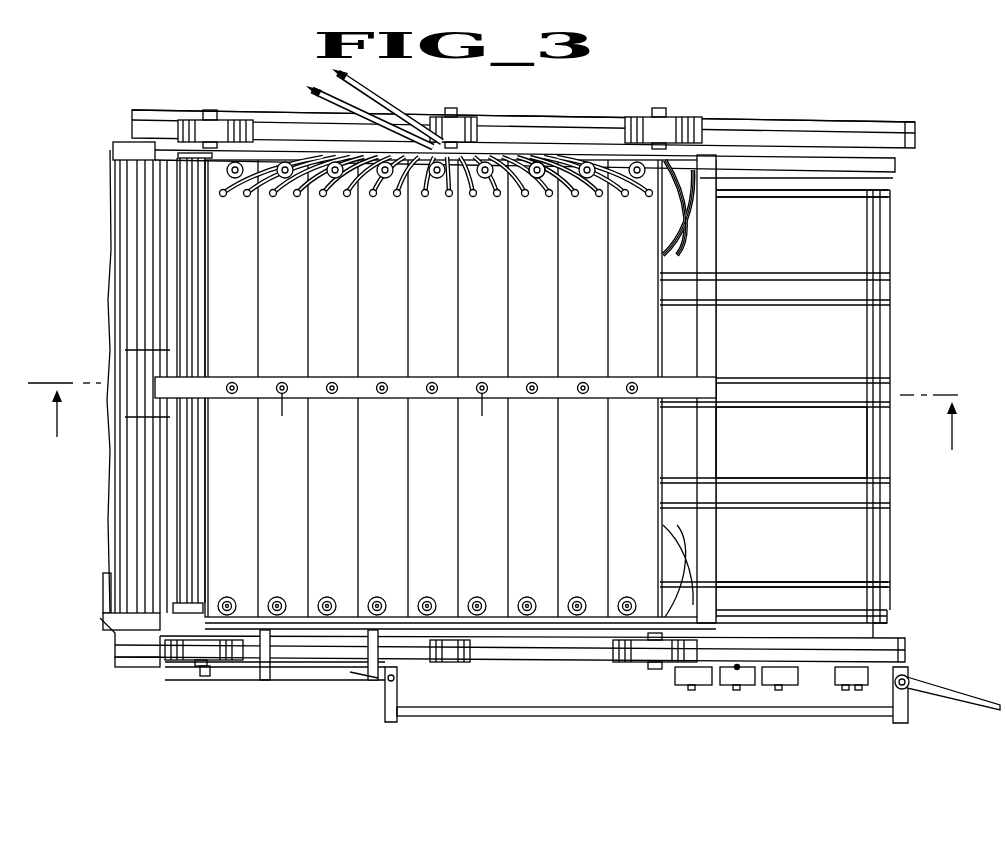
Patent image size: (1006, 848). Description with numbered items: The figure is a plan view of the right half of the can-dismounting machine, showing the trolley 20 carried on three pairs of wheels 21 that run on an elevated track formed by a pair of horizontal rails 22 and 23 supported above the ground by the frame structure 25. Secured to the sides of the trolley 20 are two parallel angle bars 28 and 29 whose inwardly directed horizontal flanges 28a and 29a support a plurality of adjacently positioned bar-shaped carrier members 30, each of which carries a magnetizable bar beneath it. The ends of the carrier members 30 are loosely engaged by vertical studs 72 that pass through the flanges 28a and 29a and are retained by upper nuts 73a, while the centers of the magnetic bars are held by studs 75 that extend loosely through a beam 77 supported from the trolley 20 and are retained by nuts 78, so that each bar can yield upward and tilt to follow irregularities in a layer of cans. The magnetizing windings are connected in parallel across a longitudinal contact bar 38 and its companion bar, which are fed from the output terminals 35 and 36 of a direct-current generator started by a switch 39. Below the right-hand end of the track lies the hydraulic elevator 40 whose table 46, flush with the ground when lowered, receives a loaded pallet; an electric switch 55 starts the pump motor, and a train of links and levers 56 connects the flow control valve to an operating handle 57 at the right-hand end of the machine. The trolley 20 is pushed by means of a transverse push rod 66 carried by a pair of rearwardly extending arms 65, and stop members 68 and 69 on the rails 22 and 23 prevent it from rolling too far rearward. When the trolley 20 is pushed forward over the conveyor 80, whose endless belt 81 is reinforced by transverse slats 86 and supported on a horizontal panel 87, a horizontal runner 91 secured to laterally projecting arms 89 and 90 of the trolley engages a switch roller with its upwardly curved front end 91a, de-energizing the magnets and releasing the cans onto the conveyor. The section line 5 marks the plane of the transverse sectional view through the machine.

The section line 5- 5 is at (494, 404).
The trolley 20 is at (640, 337).
The wheels 21 is at (223, 128).
The rail 22 is at (292, 128).
The rail 23 is at (118, 650).
The frame structure 25 is at (912, 160).
The angle bar 28 is at (680, 175).
The horizontal flange 28a is at (690, 195).
The angle bar 29 is at (677, 625).
The horizontal flange 29a is at (678, 608).
The carrier member 30 is at (332, 298).
The output terminal 35 is at (393, 115).
The output terminal 36 is at (377, 98).
The contact bar 38 is at (558, 180).
The switch 39 is at (783, 682).
The hydraulic elevator 40 is at (845, 340).
The table 46 is at (810, 452).
The electric switch 55 is at (737, 672).
The train of links and levers 56 is at (645, 710).
The operating handle 57 is at (962, 698).
The arms 65 is at (818, 198).
The push rod 66 is at (870, 500).
The stop member 68 is at (918, 137).
The stop member 69 is at (905, 648).
The vertical stud 72 is at (250, 176).
The nut 73a is at (522, 600).
The stud 75 is at (332, 393).
The beam 77 is at (450, 392).
The nut 78 is at (432, 393).
The conveyor 80 is at (140, 472).
The endless belt 81 is at (114, 170).
The transverse slats 86 is at (188, 224).
The horizontal panel 87 is at (115, 297).
The arm 89 is at (265, 660).
The arm 90 is at (372, 668).
The horizontal runner 91 is at (360, 682).
The upwardly curved front end 91a is at (203, 676).